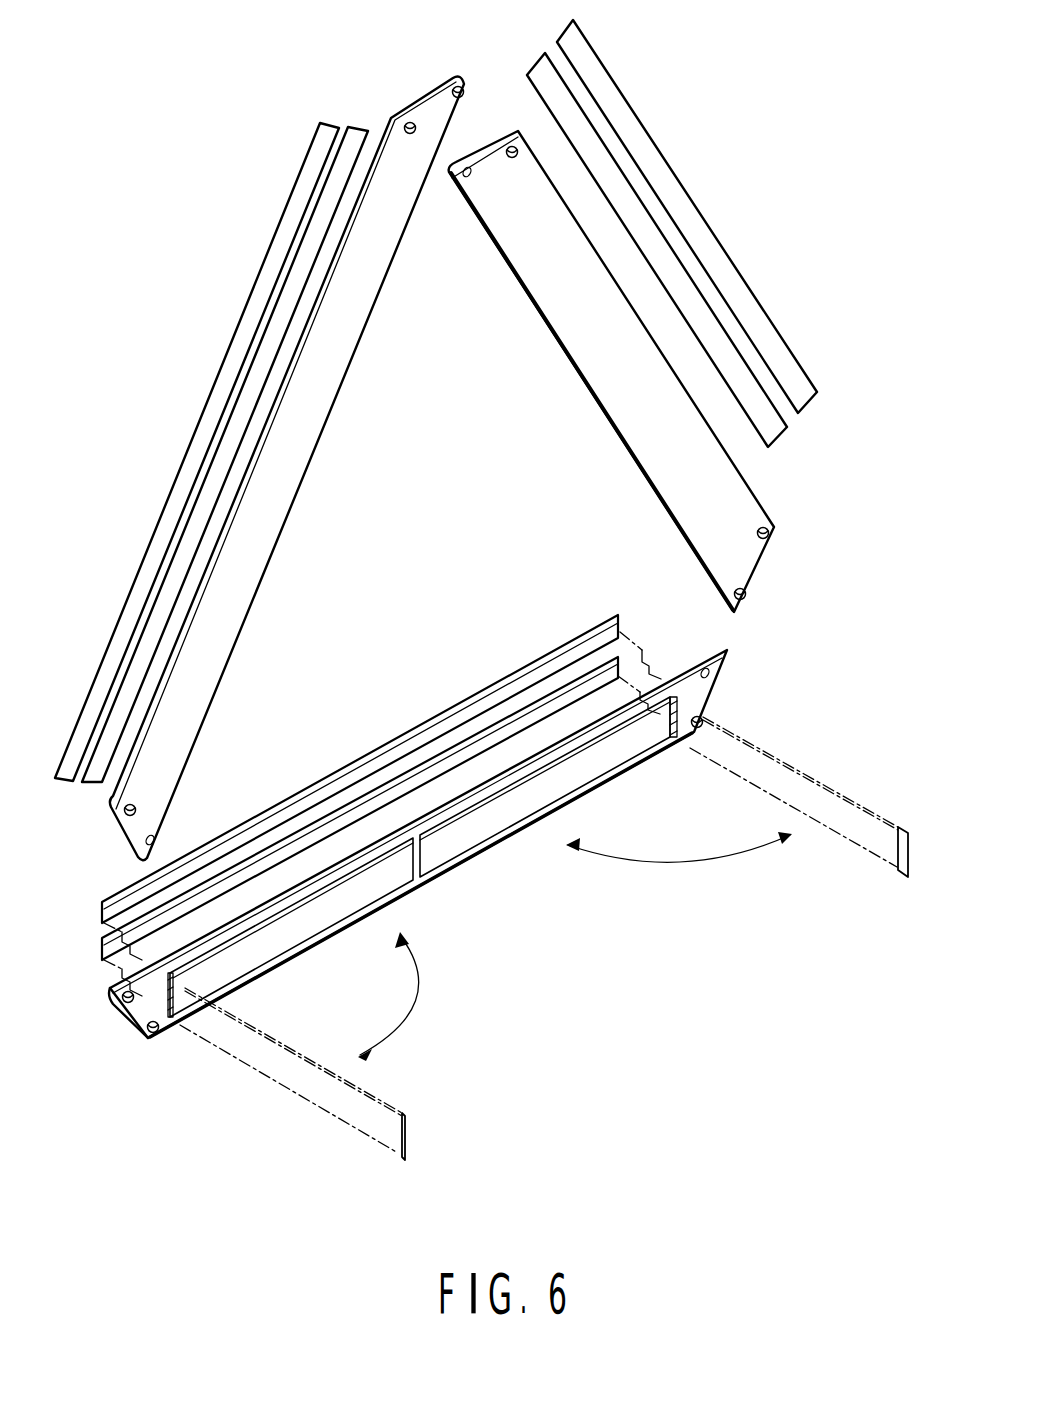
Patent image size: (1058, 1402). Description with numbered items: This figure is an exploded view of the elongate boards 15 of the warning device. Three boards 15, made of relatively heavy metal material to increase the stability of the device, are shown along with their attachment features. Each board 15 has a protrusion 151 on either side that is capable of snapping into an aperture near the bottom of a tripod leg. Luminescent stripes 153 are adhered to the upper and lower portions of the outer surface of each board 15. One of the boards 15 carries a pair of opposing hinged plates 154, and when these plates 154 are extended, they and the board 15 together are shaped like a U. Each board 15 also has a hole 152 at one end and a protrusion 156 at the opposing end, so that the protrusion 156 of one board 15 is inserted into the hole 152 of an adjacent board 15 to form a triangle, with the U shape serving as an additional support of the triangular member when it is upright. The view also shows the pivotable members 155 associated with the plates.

The elongate board 15 is at (292, 465).
The protrusion 151 is at (705, 720).
The hole 152 is at (708, 678).
The luminescent stripe 153 is at (243, 343).
The hinged plate 154 is at (687, 705).
The pivotable panel 155 is at (520, 803).
The protrusion 156 is at (117, 1017).